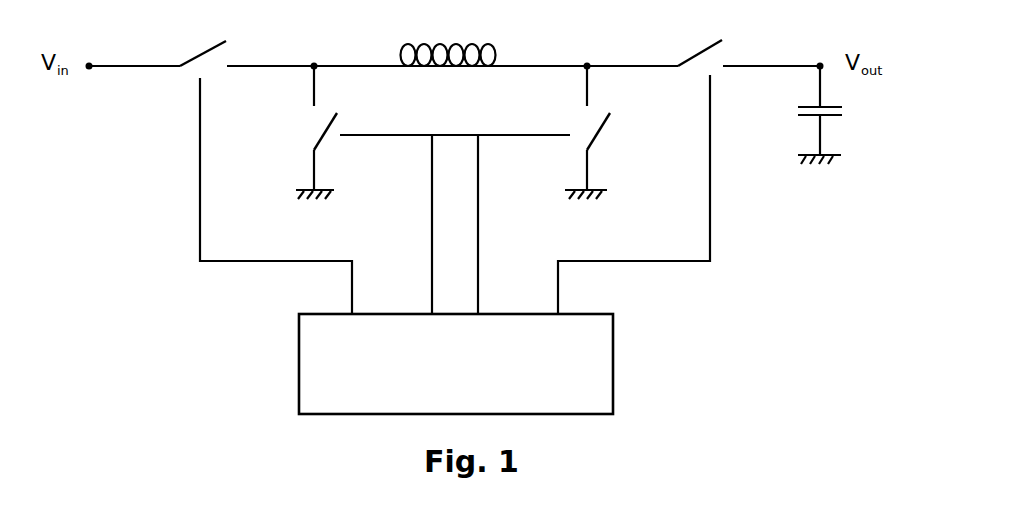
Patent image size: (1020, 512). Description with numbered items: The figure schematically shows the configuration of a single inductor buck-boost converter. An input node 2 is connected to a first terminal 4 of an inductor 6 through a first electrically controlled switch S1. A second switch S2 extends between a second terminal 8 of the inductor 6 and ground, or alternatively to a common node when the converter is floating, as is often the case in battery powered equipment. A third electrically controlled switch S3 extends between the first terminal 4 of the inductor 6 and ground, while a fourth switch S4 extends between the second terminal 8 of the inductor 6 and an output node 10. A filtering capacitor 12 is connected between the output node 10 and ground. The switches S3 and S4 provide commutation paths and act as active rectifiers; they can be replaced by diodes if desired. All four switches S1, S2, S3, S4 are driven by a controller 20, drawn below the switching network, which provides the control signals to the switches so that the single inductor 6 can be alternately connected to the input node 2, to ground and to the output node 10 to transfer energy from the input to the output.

The input node 2 is at (90, 69).
The first terminal of the inductor 4 is at (313, 64).
The inductor 6 is at (459, 44).
The second terminal of the inductor 8 is at (585, 64).
The output node 10 is at (819, 64).
The filtering capacitor 12 is at (843, 110).
The controller 20 is at (613, 355).
The first electrically controlled switch S1 is at (205, 55).
The second switch S2 is at (598, 133).
The third electrically controlled switch S3 is at (307, 134).
The fourth switch S4 is at (700, 56).